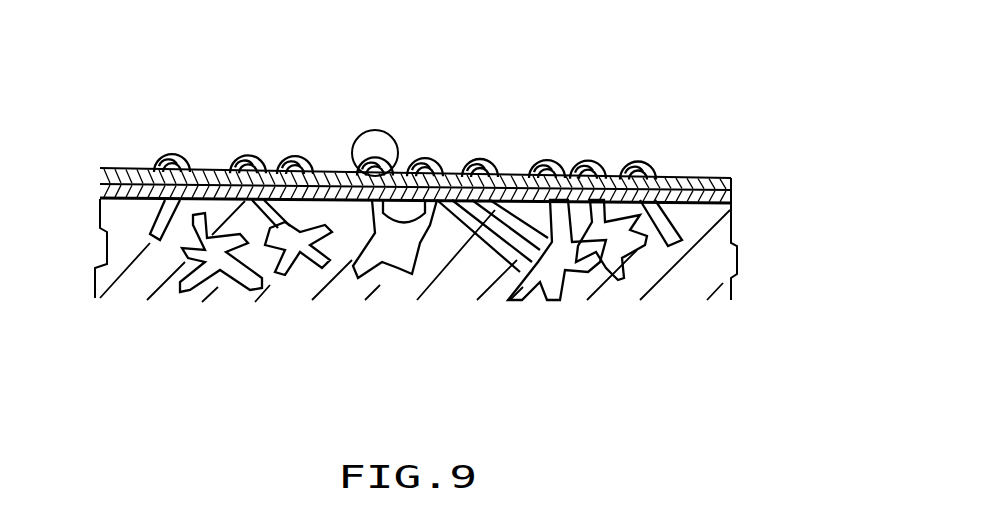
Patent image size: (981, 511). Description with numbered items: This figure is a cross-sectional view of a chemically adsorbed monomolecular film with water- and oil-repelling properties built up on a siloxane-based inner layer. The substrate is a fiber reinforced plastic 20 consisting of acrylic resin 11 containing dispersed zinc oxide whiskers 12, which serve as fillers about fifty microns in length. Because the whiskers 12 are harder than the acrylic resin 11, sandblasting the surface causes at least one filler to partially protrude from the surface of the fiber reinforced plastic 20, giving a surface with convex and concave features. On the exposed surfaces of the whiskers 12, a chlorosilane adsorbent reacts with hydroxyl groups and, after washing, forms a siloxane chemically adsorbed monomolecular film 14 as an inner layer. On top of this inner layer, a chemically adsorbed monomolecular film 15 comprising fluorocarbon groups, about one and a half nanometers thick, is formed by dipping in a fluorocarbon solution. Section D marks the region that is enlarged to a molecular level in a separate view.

The acrylic resin 11 is at (460, 283).
The zinc oxide whiskers 12 is at (365, 277).
The siloxane chemically adsorbed monomolecular film 14 is at (731, 197).
The chemically adsorbed monomolecular film 15 is at (687, 179).
The fiber reinforced plastic 20 is at (737, 253).
The section D is at (378, 130).